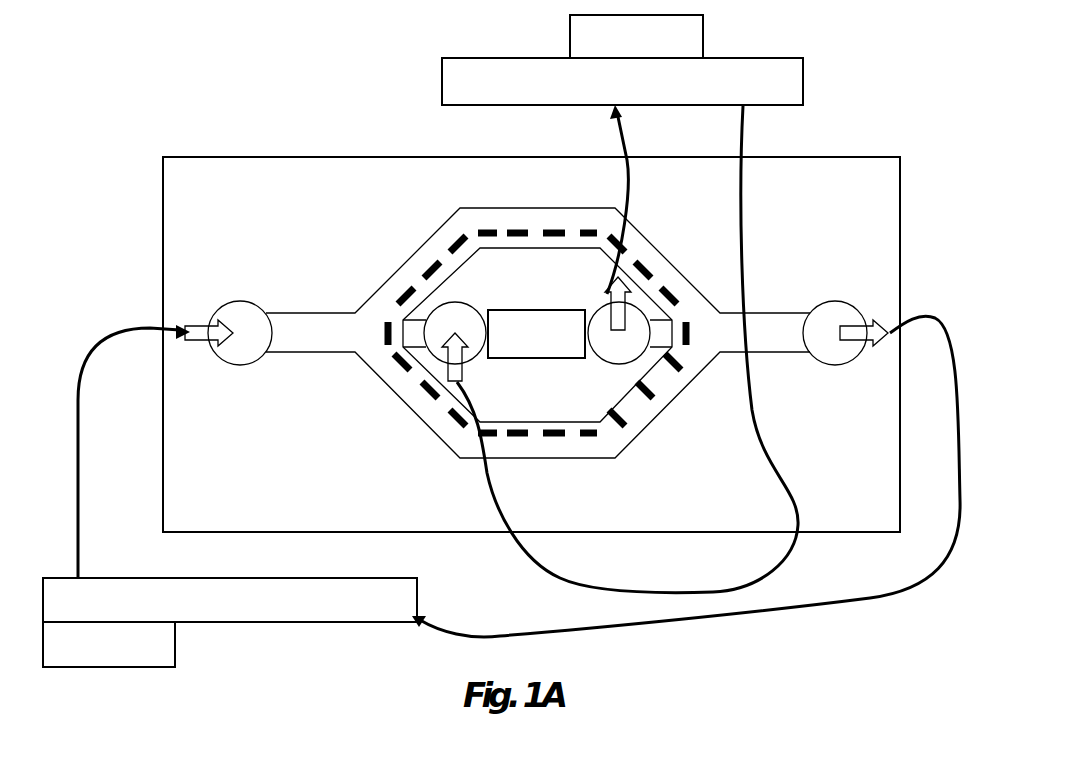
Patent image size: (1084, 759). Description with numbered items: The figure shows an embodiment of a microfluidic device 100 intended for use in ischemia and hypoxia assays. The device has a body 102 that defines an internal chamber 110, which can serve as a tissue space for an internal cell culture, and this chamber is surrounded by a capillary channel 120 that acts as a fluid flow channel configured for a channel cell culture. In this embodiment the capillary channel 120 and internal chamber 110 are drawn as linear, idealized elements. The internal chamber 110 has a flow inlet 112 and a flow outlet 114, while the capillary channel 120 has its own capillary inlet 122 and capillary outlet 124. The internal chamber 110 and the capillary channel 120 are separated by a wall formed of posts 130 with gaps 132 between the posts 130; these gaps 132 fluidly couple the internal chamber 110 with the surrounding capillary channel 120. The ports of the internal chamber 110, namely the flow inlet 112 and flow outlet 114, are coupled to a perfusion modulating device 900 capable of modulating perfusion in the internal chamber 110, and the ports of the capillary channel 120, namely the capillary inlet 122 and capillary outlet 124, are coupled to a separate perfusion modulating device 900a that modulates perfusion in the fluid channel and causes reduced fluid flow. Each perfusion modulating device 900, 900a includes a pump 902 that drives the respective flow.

The microfluidic device 100 is at (530, 325).
The body 102 is at (302, 207).
The internal chamber 110 is at (483, 260).
The flow inlet 112 is at (430, 335).
The flow outlet 114 is at (630, 348).
The capillary channel 120 is at (422, 255).
The capillary inlet 122 is at (222, 315).
The capillary outlet 124 is at (850, 315).
The posts 130 is at (452, 440).
The gaps 132 is at (541, 443).
The perfusion modulating device 900 is at (786, 96).
The perfusion modulating device 900a is at (397, 614).
The pump 902 is at (689, 52).